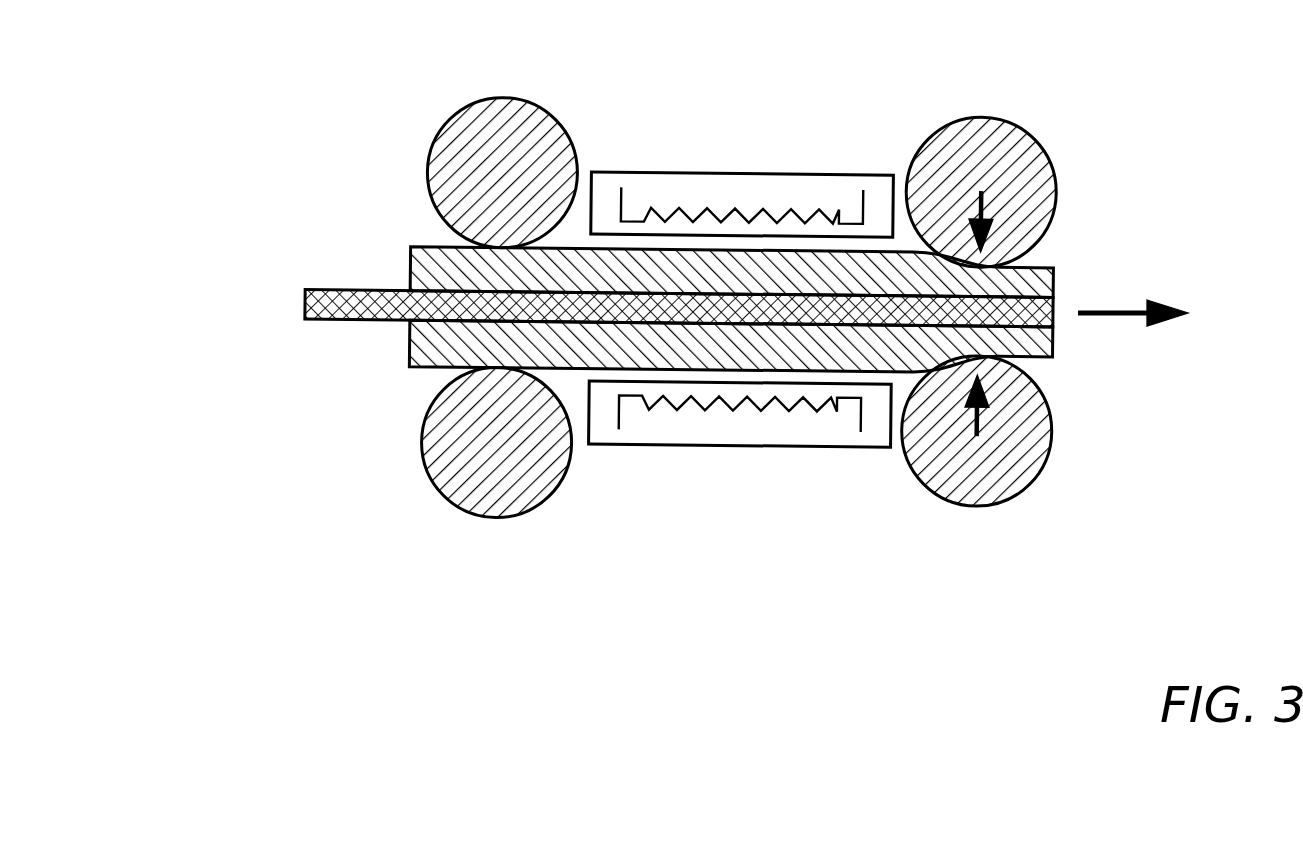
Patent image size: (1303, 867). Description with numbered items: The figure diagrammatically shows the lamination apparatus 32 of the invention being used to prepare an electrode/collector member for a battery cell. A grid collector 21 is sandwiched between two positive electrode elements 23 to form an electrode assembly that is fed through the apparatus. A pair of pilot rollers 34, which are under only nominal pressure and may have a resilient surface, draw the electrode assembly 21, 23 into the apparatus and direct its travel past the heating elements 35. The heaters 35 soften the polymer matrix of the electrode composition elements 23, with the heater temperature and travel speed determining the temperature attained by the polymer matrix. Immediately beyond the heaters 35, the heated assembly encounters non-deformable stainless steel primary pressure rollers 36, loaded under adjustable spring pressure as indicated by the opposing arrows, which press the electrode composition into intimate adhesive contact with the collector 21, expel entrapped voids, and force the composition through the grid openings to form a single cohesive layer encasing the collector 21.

The grid collector 21 is at (350, 322).
The positive electrode elements 23 is at (410, 262).
The lamination apparatus 32 is at (240, 553).
The pilot rollers 34 is at (497, 96).
The heating elements 35 is at (733, 175).
The pressure rollers 36 is at (1035, 147).